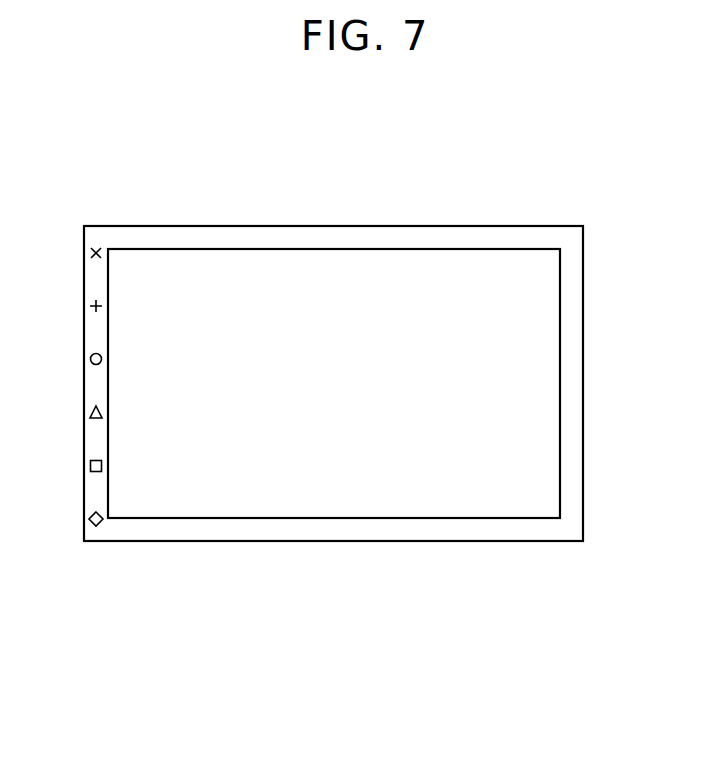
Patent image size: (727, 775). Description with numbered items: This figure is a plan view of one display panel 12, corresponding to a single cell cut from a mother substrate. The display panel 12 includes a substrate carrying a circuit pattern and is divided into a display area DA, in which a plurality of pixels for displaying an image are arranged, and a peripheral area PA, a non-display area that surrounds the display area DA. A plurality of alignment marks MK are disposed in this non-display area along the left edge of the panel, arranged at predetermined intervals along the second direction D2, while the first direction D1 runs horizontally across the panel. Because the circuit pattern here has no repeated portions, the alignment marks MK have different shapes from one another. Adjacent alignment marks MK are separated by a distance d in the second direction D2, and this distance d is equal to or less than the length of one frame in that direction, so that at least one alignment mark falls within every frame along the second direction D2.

The display panel 12 is at (490, 209).
The display area DA is at (172, 285).
The peripheral area PA is at (256, 238).
The alignment marks MK is at (87, 306).
The distance d is at (84, 412).
The first direction D1 is at (83, 631).
The second direction D2 is at (83, 631).